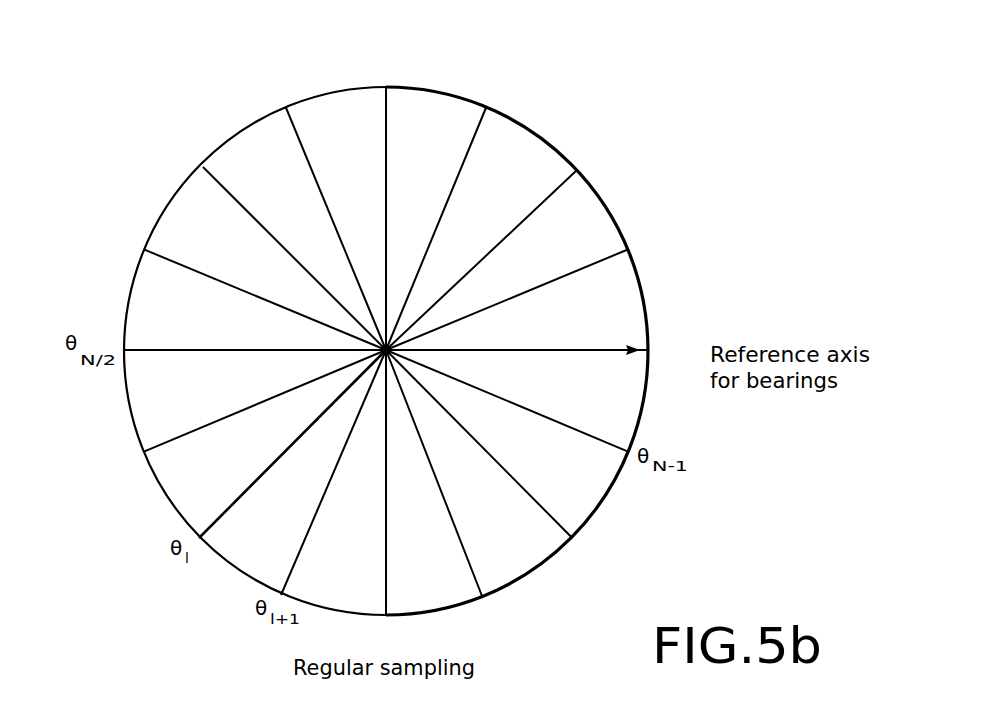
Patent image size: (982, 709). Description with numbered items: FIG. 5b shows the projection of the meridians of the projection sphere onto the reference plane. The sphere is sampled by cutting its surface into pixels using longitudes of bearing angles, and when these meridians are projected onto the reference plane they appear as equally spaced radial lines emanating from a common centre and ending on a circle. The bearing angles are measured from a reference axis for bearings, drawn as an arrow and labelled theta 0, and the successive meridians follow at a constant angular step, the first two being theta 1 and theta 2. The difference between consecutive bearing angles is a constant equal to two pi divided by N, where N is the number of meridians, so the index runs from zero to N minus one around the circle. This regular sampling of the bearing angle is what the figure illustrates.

The reference axis for bearings (bearing theta 0) 0 is at (535, 356).
The first sampled bearing direction (theta 1) 1 is at (523, 291).
The second sampled bearing direction (theta 2) 2 is at (497, 248).